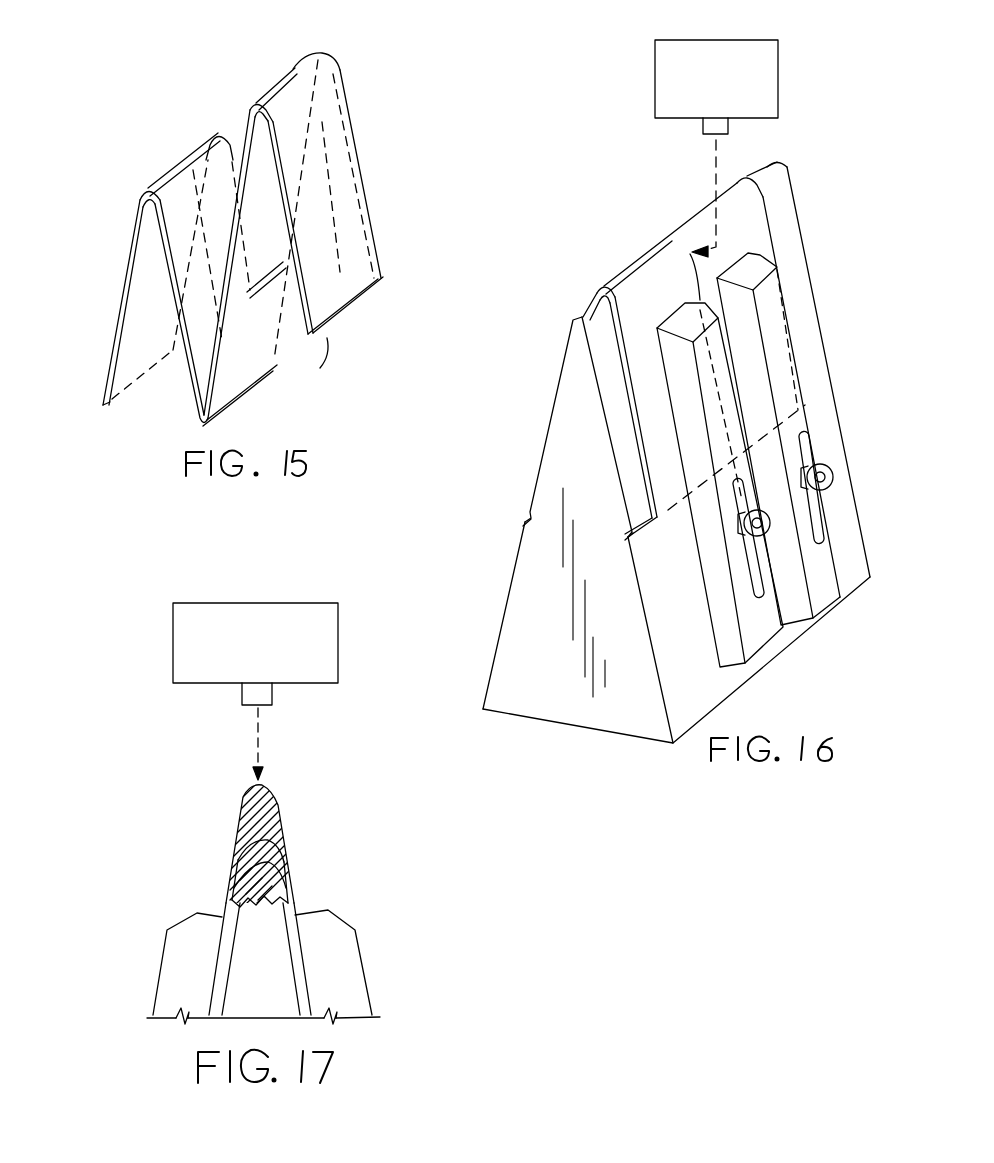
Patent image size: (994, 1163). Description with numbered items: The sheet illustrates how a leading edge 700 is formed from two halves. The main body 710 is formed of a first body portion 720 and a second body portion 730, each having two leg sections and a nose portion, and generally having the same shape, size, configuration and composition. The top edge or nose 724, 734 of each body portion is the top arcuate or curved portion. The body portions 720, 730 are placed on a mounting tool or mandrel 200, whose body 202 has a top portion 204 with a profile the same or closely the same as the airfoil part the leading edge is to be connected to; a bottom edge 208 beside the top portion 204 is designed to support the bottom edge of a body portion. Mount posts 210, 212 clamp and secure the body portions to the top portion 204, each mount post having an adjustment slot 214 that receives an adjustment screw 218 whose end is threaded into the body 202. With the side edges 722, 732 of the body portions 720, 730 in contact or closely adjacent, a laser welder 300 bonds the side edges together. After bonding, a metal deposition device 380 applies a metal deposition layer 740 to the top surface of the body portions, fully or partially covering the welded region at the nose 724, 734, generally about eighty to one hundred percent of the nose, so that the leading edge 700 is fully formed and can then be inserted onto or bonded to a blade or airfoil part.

In FIG. 15, the leading edge 700 is at (229, 216).
In FIG. 16, the leading edge 700 is at (689, 379).
In FIG. 15, the main body 710 is at (278, 380).
In FIG. 15, the first body portion 720 is at (340, 167).
In FIG. 16, the first body portion 720 is at (748, 206).
In FIG. 17, the first body portion 720 is at (232, 910).
In FIG. 15, the side edge 722 is at (245, 126).
In FIG. 16, the side edge 722 is at (690, 254).
In FIG. 15, the top edge or nose 724 is at (297, 69).
In FIG. 16, the top edge or nose 724 is at (762, 179).
In FIG. 17, the top edge or nose 724 is at (257, 838).
In FIG. 15, the second body portion 730 is at (140, 281).
In FIG. 16, the second body portion 730 is at (600, 289).
In FIG. 15, the side edge 732 is at (228, 146).
In FIG. 16, the side edge 732 is at (672, 237).
In FIG. 15, the top edge or nose 734 is at (165, 179).
In FIG. 16, the top edge or nose 734 is at (633, 407).
In FIG. 16, the mounting tool or mandrel 200 is at (668, 498).
In FIG. 16, the body 202 is at (513, 631).
In FIG. 16, the top portion 204 is at (565, 424).
In FIG. 17, the top portion 204 is at (272, 958).
In FIG. 16, the bottom edge 208 is at (526, 521).
In FIG. 16, the mount post 210 is at (720, 356).
In FIG. 17, the mount post 210 is at (345, 964).
In FIG. 17, the mount post 212 is at (173, 966).
In FIG. 16, the adjustment slot 214 is at (763, 584).
In FIG. 16, the adjustment screw 218 is at (771, 523).
In FIG. 16, the laser welder 300 is at (779, 72).
In FIG. 17, the metal deposition device 380 is at (172, 638).
In FIG. 17, the metal deposition layer 740 is at (272, 811).